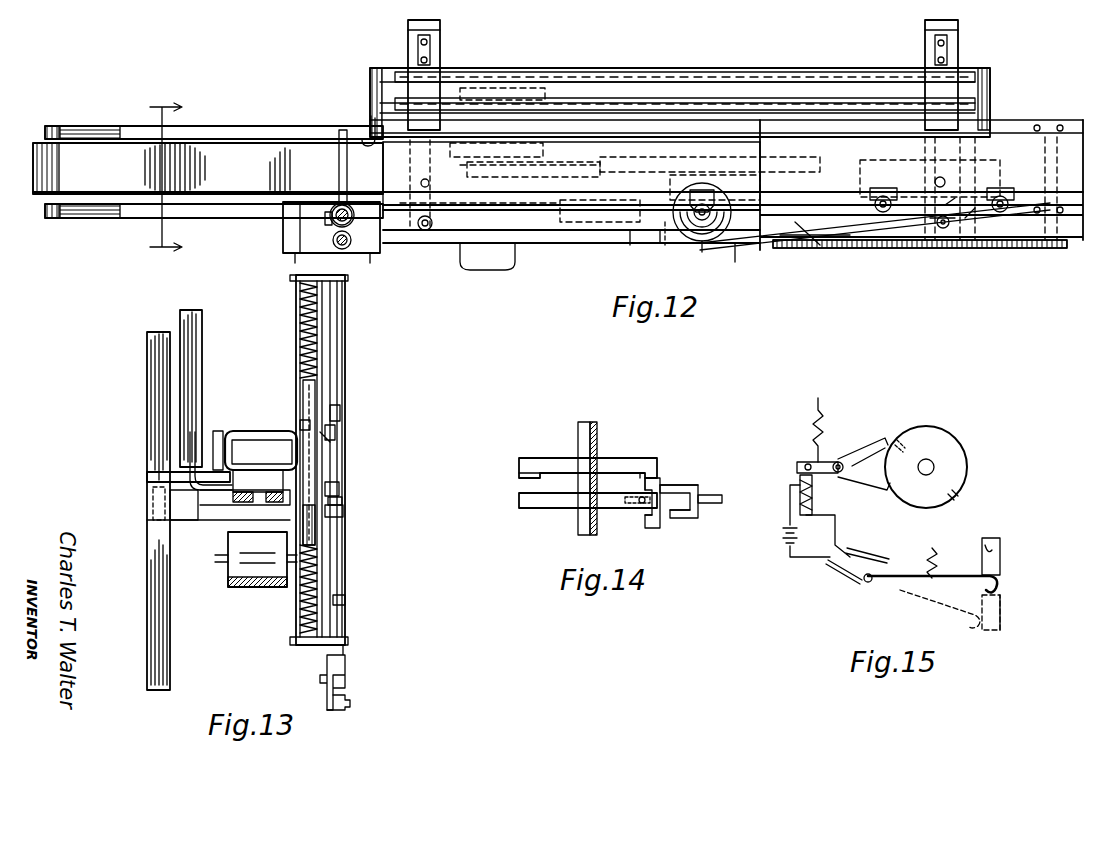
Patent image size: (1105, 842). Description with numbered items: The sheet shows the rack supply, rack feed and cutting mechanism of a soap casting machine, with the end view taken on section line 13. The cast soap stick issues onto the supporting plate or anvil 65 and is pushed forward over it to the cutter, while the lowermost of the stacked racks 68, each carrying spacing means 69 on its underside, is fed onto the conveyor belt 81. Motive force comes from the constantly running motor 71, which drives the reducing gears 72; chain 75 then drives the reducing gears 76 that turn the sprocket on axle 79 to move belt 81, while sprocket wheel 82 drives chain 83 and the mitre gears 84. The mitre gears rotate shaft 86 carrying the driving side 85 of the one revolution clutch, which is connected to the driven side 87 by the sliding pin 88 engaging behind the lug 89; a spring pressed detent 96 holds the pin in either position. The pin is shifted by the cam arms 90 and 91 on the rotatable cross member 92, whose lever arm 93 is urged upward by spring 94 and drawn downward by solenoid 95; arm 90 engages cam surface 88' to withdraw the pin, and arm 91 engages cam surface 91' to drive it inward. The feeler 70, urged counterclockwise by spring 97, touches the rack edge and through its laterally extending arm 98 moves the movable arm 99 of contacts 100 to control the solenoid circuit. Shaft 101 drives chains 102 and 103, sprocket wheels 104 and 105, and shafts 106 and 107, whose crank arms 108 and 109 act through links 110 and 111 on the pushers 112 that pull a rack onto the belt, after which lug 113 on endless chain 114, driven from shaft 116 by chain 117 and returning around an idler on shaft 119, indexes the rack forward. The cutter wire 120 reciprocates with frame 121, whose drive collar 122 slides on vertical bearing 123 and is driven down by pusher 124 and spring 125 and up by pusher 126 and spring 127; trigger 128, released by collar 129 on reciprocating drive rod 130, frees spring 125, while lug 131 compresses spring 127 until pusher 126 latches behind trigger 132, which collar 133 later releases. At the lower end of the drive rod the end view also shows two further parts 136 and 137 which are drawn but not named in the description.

In FIG. 12, the section line 13 is at (173, 176).
In FIG. 12, the supporting plate or anvil 65 is at (1035, 152).
In FIG. 13, the supporting plate or anvil 65 is at (236, 504).
In FIG. 12, the racks 68 is at (608, 108).
In FIG. 15, the racks 68 is at (1000, 550).
In FIG. 12, the spacing means 69 is at (460, 78).
In FIG. 13, the spacing means 69 is at (178, 515).
In FIG. 12, the feeler 70 is at (372, 122).
In FIG. 13, the feeler 70 is at (188, 462).
In FIG. 15, the feeler 70 is at (1000, 586).
In FIG. 12, the motor 71 is at (546, 92).
In FIG. 12, the reducing gears 72 is at (645, 183).
In FIG. 12, the chain 75 is at (668, 155).
In FIG. 12, the reducing gears 76 is at (845, 168).
In FIG. 12, the axle 79 is at (1030, 250).
In FIG. 12, the conveyor belt 81 is at (197, 150).
In FIG. 13, the conveyor belt 81 is at (250, 532).
In FIG. 12, the sprocket wheel 82 is at (648, 245).
In FIG. 12, the chain 83 is at (668, 244).
In FIG. 12, the mitre gears 84 is at (706, 250).
In FIG. 14, the driving side of the one revolution clutch 85 is at (545, 500).
In FIG. 14, the shaft 86 is at (590, 530).
In FIG. 14, the driven side of the one revolution clutch 87 is at (548, 458).
In FIG. 15, the driven side of the one revolution clutch 87 is at (948, 453).
In FIG. 14, the sliding pin 88 is at (633, 509).
In FIG. 14, the cam surface 88' is at (659, 539).
In FIG. 14, the lug 89 is at (648, 458).
In FIG. 15, the lug 89 is at (915, 438).
In FIG. 14, the cam arm 90 is at (685, 518).
In FIG. 15, the cam arm 90 is at (870, 443).
In FIG. 14, the cam arm 91 is at (696, 461).
In FIG. 14, the cam surface 91' is at (675, 453).
In FIG. 14, the cross member 92 is at (698, 488).
In FIG. 15, the cross member 92 is at (836, 460).
In FIG. 14, the lever arm 93 is at (715, 504).
In FIG. 15, the lever arm 93 is at (815, 462).
In FIG. 15, the spring 94 is at (822, 422).
In FIG. 15, the solenoid 95 is at (800, 498).
In FIG. 14, the spring pressed detent 96 is at (628, 493).
In FIG. 15, the spring 97 is at (938, 553).
In FIG. 15, the laterally extending arm 98 is at (865, 582).
In FIG. 15, the movable arm 99 is at (870, 559).
In FIG. 15, the contacts 100 is at (830, 568).
In FIG. 12, the shaft 101 is at (702, 206).
In FIG. 14, the shaft 101 is at (585, 425).
In FIG. 15, the shaft 101 is at (935, 470).
In FIG. 12, the chain 102 is at (530, 210).
In FIG. 12, the chain 103 is at (845, 232).
In FIG. 12, the sprocket wheel 104 is at (420, 230).
In FIG. 12, the sprocket wheel 105 is at (944, 230).
In FIG. 12, the shaft 106 is at (428, 230).
In FIG. 12, the shaft 107 is at (935, 228).
In FIG. 12, the crank arm 108 is at (480, 200).
In FIG. 12, the crank arm 109 is at (964, 201).
In FIG. 12, the link 110 is at (420, 170).
In FIG. 12, the link 111 is at (946, 168).
In FIG. 12, the pushers 112 is at (432, 54).
In FIG. 12, the lug 113 is at (890, 228).
In FIG. 12, the endless chain 114 is at (983, 222).
In FIG. 12, the shaft 116 is at (893, 176).
In FIG. 12, the chain 117 is at (740, 248).
In FIG. 12, the shaft 119 is at (1000, 213).
In FIG. 13, the wire 120 is at (240, 464).
In FIG. 12, the frame 121 is at (339, 156).
In FIG. 13, the frame 121 is at (236, 438).
In FIG. 13, the drive collar 122 is at (300, 425).
In FIG. 12, the vertical bearing 123 is at (334, 206).
In FIG. 13, the vertical bearing 123 is at (338, 488).
In FIG. 13, the pusher 124 is at (303, 384).
In FIG. 13, the spring 125 is at (300, 298).
In FIG. 13, the pusher 126 is at (318, 533).
In FIG. 13, the spring 127 is at (300, 623).
In FIG. 12, the trigger 128 is at (325, 218).
In FIG. 13, the trigger 128 is at (334, 434).
In FIG. 13, the collar 129 is at (338, 408).
In FIG. 12, the reciprocating drive rod 130 is at (320, 241).
In FIG. 13, the reciprocating drive rod 130 is at (335, 356).
In FIG. 13, the lug 131 is at (345, 508).
In FIG. 13, the trigger 132 is at (343, 498).
In FIG. 13, the collar 133 is at (346, 600).
In FIG. 13, the foot 136 is at (352, 700).
In FIG. 13, the bracket 137 is at (340, 688).